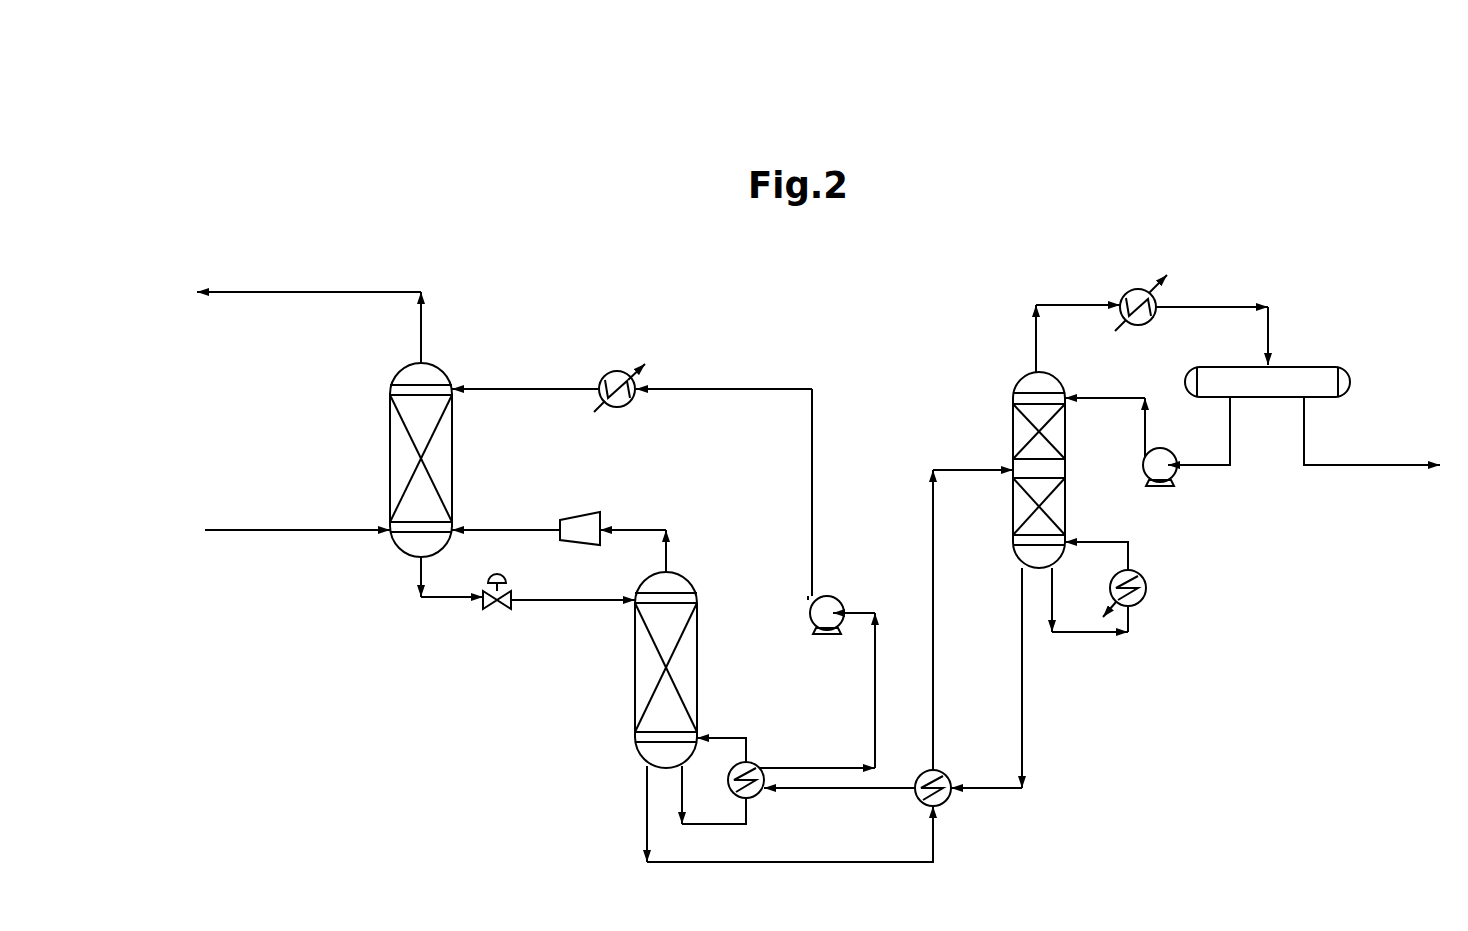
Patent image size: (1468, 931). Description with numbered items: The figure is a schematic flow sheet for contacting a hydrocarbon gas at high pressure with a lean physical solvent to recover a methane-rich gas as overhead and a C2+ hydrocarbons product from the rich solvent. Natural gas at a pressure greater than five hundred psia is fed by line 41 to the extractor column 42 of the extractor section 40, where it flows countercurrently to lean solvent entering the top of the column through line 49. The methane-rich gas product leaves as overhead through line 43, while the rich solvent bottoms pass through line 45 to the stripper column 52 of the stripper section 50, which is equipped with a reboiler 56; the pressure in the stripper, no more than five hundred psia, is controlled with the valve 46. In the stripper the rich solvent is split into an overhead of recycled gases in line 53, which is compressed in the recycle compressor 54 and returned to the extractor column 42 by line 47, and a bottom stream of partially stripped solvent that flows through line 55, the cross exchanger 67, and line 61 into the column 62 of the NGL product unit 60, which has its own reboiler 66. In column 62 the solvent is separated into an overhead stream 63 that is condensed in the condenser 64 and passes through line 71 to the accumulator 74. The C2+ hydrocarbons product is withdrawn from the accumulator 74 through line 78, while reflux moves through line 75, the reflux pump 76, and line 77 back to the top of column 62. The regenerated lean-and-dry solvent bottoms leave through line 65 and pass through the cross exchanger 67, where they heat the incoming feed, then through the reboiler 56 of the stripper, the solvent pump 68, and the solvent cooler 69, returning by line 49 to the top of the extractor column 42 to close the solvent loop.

The extractor section 40 is at (377, 460).
The inlet gas line 41 is at (345, 530).
The extractor column 42 is at (453, 470).
The methane-rich gas product line 43 is at (416, 295).
The rich solvent line 45 is at (456, 599).
The valve 46 is at (506, 580).
The recycle line 47 is at (512, 528).
The lean solvent line 49 is at (580, 386).
The stripper section 50 is at (623, 670).
The stripper column 52 is at (698, 676).
The stripper overhead line 53 is at (662, 556).
The recycle compressor 54 is at (605, 523).
The partially stripped solvent line 55 is at (742, 863).
The reboiler 56 is at (730, 769).
The NGL product unit 60 is at (995, 453).
The feed line to NGL column 61 is at (977, 473).
The NGL product column 62 is at (1066, 468).
The overhead stream 63 is at (1040, 338).
The condenser 64 is at (1155, 328).
The lean solvent bottoms line 65 is at (1019, 745).
The reboiler 66 is at (1141, 575).
The cross exchanger 67 is at (918, 797).
The solvent pump 68 is at (812, 610).
The solvent cooler 69 is at (611, 371).
The condensate line 71 is at (1218, 310).
The accumulator 74 is at (1292, 366).
The reflux line 75 is at (1230, 445).
The reflux pump 76 is at (1146, 469).
The reflux return line 77 is at (1145, 420).
The C2+ product line 78 is at (1304, 451).